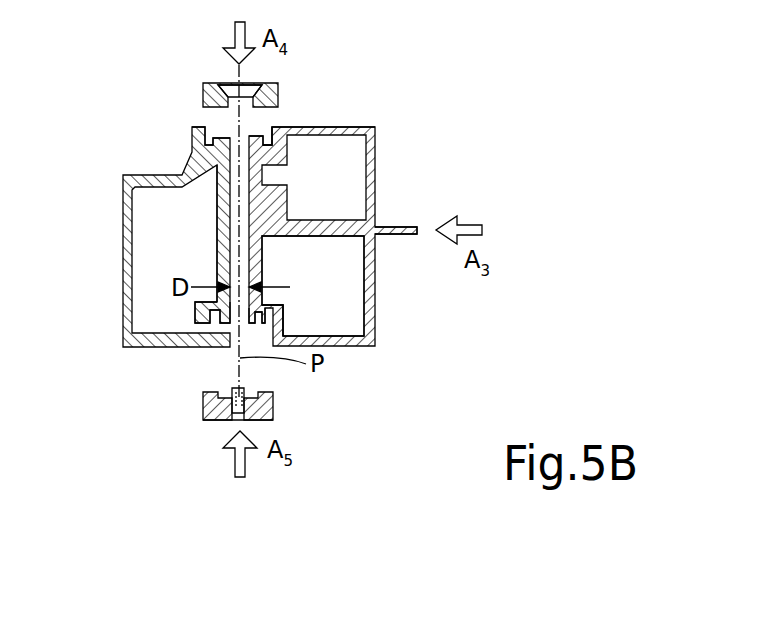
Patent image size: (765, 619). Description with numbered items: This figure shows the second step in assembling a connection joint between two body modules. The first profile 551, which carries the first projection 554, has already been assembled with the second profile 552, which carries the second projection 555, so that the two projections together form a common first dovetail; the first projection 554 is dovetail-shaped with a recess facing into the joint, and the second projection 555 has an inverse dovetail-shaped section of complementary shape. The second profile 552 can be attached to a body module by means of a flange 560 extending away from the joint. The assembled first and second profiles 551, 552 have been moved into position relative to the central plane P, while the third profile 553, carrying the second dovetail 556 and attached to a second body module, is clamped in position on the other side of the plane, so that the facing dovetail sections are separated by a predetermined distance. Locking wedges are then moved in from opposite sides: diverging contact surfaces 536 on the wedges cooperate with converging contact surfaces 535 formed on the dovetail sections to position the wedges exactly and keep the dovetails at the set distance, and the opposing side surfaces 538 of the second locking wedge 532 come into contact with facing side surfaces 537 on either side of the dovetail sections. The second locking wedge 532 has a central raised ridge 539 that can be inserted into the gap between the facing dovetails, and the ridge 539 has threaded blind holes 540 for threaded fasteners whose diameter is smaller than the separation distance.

The second locking wedge 532 is at (275, 430).
The converging contact surfaces 535 is at (268, 136).
The diverging contact surfaces 536 is at (257, 104).
The facing side surfaces 537 is at (264, 336).
The opposing side surfaces 538 is at (203, 408).
The central raised ridge 539 is at (244, 388).
The threaded blind holes 540 is at (222, 420).
The first profile 551 is at (333, 236).
The second profile 552 is at (313, 286).
The third profile 553 is at (176, 237).
The first projection 554 is at (287, 160).
The second projection 555 is at (280, 307).
The second dovetail 556 is at (218, 208).
The flange 560 is at (395, 228).